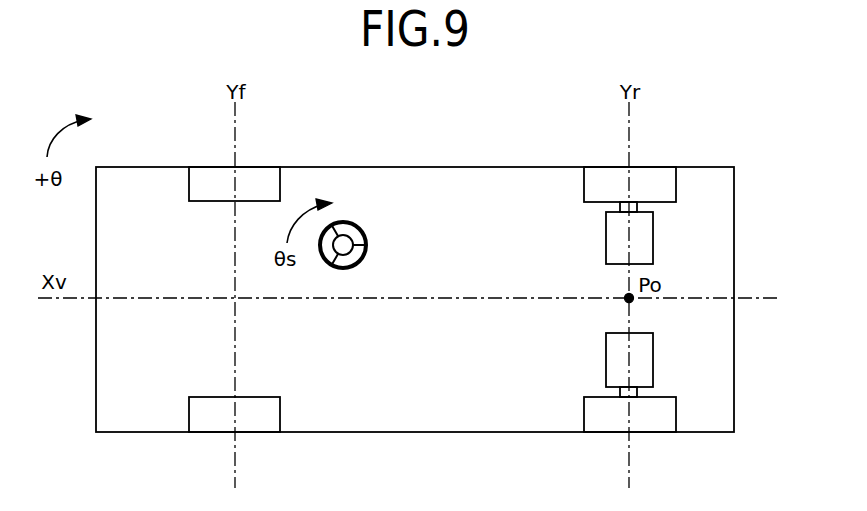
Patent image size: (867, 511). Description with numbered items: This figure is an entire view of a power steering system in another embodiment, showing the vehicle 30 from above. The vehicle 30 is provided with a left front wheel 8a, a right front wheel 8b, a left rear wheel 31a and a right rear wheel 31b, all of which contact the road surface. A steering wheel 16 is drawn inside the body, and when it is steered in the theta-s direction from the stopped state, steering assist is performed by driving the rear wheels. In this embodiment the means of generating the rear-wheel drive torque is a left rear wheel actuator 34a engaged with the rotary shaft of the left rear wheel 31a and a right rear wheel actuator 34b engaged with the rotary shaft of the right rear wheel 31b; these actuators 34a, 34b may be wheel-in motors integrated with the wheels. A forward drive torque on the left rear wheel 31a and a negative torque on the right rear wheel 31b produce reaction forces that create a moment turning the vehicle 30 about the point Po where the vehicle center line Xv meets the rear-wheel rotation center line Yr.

The vehicle 30 is at (415, 167).
The left front wheel 8a is at (207, 424).
The right front wheel 8b is at (262, 175).
The left rear wheel 31a is at (655, 424).
The right rear wheel 31b is at (657, 173).
The left rear wheel actuator 34a is at (612, 360).
The right rear wheel actuator 34b is at (612, 237).
The steering wheel 16 is at (367, 253).